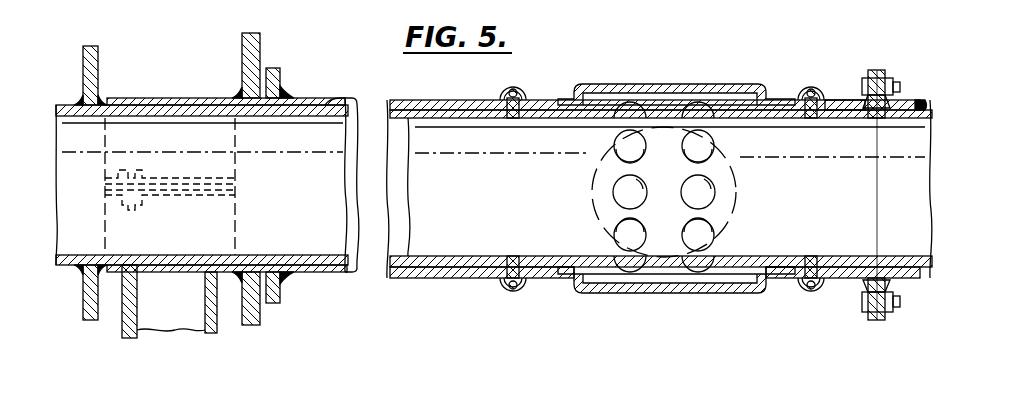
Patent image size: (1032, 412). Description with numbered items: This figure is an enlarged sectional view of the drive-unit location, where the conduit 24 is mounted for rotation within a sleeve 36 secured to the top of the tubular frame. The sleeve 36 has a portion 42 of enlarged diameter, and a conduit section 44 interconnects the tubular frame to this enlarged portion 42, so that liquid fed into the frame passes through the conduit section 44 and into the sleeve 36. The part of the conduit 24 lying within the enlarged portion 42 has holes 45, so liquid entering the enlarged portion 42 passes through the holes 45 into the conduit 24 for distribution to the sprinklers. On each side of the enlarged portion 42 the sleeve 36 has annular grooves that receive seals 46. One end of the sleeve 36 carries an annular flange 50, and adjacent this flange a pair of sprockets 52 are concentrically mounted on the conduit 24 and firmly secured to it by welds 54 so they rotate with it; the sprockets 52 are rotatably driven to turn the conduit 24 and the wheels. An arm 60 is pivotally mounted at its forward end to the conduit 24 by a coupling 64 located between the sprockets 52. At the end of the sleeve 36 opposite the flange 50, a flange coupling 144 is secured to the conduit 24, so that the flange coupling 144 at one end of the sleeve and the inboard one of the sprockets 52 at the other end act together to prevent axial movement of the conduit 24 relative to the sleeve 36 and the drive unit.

The conduit 24 is at (408, 164).
The sleeve 36 is at (393, 100).
The portion of enlarged diameter 42 is at (659, 84).
The conduit section 44 is at (592, 208).
The holes 45 is at (675, 168).
The seals 46 is at (509, 292).
The annular flange 50 is at (276, 80).
The sprockets 52 is at (88, 45).
The welds 54 is at (80, 104).
The arm 60 is at (160, 331).
The coupling 64 is at (160, 97).
The flange coupling 144 is at (887, 63).